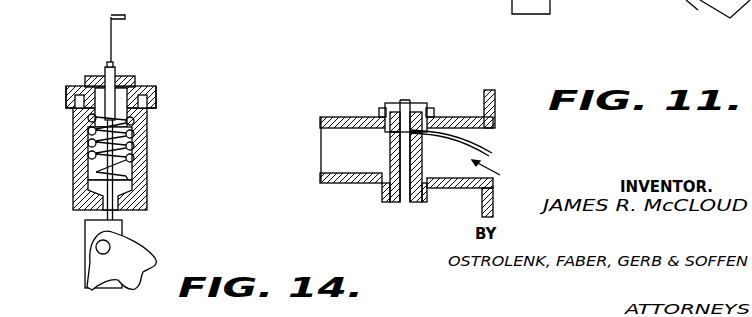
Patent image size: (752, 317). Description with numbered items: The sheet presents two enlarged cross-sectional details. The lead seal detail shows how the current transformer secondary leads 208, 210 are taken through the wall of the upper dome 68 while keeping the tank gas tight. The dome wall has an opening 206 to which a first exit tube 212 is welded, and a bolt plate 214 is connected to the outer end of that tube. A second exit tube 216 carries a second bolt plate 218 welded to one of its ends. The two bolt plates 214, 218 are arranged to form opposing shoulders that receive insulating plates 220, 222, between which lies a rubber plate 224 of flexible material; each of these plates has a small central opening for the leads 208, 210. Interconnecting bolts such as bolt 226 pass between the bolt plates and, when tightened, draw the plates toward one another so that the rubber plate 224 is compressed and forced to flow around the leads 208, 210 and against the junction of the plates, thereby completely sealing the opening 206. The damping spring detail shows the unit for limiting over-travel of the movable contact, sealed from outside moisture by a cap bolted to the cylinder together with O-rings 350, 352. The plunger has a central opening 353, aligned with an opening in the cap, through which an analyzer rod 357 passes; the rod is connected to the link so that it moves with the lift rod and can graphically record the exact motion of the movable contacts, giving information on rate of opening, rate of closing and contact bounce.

In FIG. 14, the O-ring 350 is at (92, 88).
In FIG. 14, the O-ring 352 is at (156, 100).
In FIG. 14, the central opening 353 is at (95, 212).
In FIG. 14, the analyzer rod 357 is at (113, 32).
In FIG. 11, the upper dome 68 is at (496, 98).
In FIG. 11, the opening 206 is at (504, 173).
In FIG. 11, the lead 208 is at (490, 150).
In FIG. 11, the lead 210 is at (488, 153).
In FIG. 11, the first exit tube 212 is at (460, 109).
In FIG. 11, the bolt plate 214 is at (419, 107).
In FIG. 11, the second exit tube 216 is at (350, 118).
In FIG. 11, the second bolt plate 218 is at (400, 103).
In FIG. 11, the insulating plate 220 is at (390, 160).
In FIG. 11, the insulating plate 222 is at (413, 163).
In FIG. 11, the rubber plate 224 is at (392, 139).
In FIG. 11, the bolt 226 is at (382, 108).